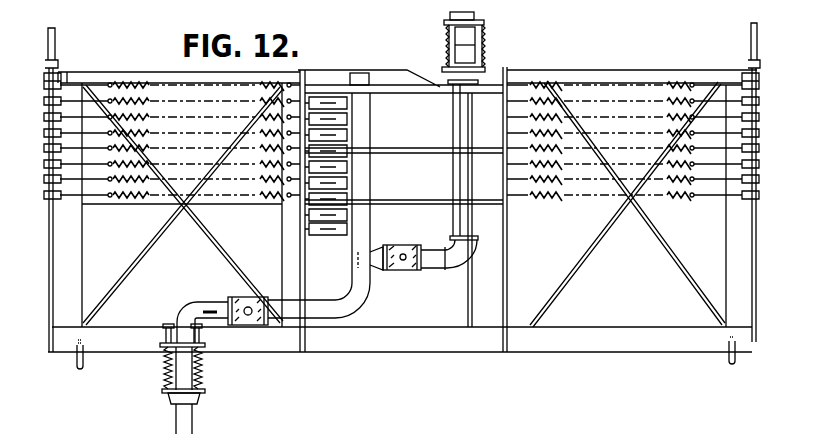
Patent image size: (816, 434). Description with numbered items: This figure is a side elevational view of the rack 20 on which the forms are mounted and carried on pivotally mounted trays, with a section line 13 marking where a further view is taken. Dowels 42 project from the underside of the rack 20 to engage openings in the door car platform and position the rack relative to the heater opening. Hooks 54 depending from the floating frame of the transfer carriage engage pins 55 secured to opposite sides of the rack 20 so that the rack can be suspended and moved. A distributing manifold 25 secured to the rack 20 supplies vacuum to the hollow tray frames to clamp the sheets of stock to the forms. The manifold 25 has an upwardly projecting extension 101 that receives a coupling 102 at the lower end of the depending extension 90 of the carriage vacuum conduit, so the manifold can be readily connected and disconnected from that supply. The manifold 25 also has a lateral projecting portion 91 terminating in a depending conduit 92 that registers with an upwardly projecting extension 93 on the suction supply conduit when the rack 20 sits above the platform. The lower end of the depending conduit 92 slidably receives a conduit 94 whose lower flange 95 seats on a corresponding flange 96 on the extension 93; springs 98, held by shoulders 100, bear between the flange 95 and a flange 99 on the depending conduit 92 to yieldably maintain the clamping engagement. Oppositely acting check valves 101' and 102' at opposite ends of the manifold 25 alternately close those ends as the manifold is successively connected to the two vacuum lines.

The section line 13 is at (20, 212).
The rack 20 is at (613, 66).
The distributing manifold 25 is at (362, 184).
The dowels 42 is at (80, 361).
The hooks 54 is at (52, 44).
The pins 55 is at (55, 64).
The depending extension 90 is at (447, 17).
The lateral projecting portion 91 is at (205, 310).
The depending conduit 92 is at (182, 332).
The upwardly projecting extension 93 is at (190, 427).
The slidable conduit 94 is at (220, 356).
The flange 95 is at (205, 391).
The flange 96 is at (172, 396).
The springs 98 is at (167, 374).
The flange 99 is at (165, 345).
The shoulders 100 is at (164, 335).
The upwardly projecting extension 101 is at (439, 174).
The check valve 101' is at (325, 237).
The coupling 102 is at (500, 42).
The check valve 102' is at (415, 275).